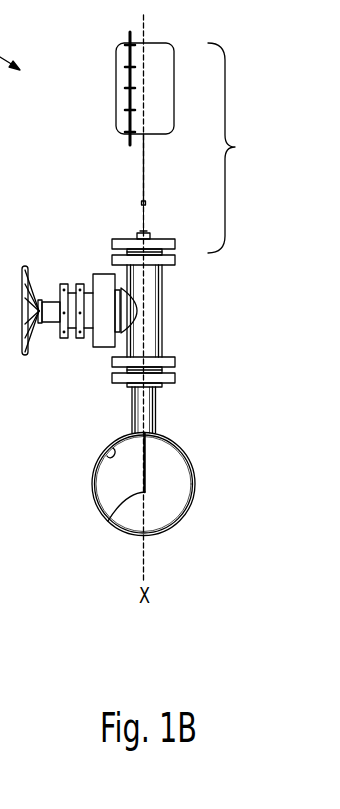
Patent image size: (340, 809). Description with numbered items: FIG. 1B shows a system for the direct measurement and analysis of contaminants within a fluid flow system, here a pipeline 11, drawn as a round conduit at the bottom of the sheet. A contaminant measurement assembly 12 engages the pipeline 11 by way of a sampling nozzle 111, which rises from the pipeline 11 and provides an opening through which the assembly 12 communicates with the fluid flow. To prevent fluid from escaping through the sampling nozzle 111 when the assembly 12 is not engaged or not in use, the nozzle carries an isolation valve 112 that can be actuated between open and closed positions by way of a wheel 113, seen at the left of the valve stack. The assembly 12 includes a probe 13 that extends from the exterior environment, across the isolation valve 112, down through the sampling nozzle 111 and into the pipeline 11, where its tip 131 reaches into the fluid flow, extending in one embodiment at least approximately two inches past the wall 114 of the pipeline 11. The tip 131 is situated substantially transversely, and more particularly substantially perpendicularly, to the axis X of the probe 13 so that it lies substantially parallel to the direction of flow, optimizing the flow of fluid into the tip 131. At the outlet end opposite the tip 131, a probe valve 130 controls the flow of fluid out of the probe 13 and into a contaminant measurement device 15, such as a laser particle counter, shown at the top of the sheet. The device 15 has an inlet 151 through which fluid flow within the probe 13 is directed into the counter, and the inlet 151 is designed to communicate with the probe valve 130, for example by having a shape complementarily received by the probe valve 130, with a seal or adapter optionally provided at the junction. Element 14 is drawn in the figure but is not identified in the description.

The pipeline 11 is at (195, 484).
The sampling nozzle 111 is at (157, 420).
The isolation valve 112 is at (177, 261).
The wheel 113 is at (27, 266).
The wall 114 is at (107, 456).
The contaminant measurement assembly 12 is at (233, 148).
The probe 13 is at (146, 466).
The probe valve 130 is at (145, 202).
The tip 131 is at (108, 521).
The sealing nut 14 is at (149, 233).
The contaminant measurement device 15 is at (168, 43).
The inlet 151 is at (142, 148).